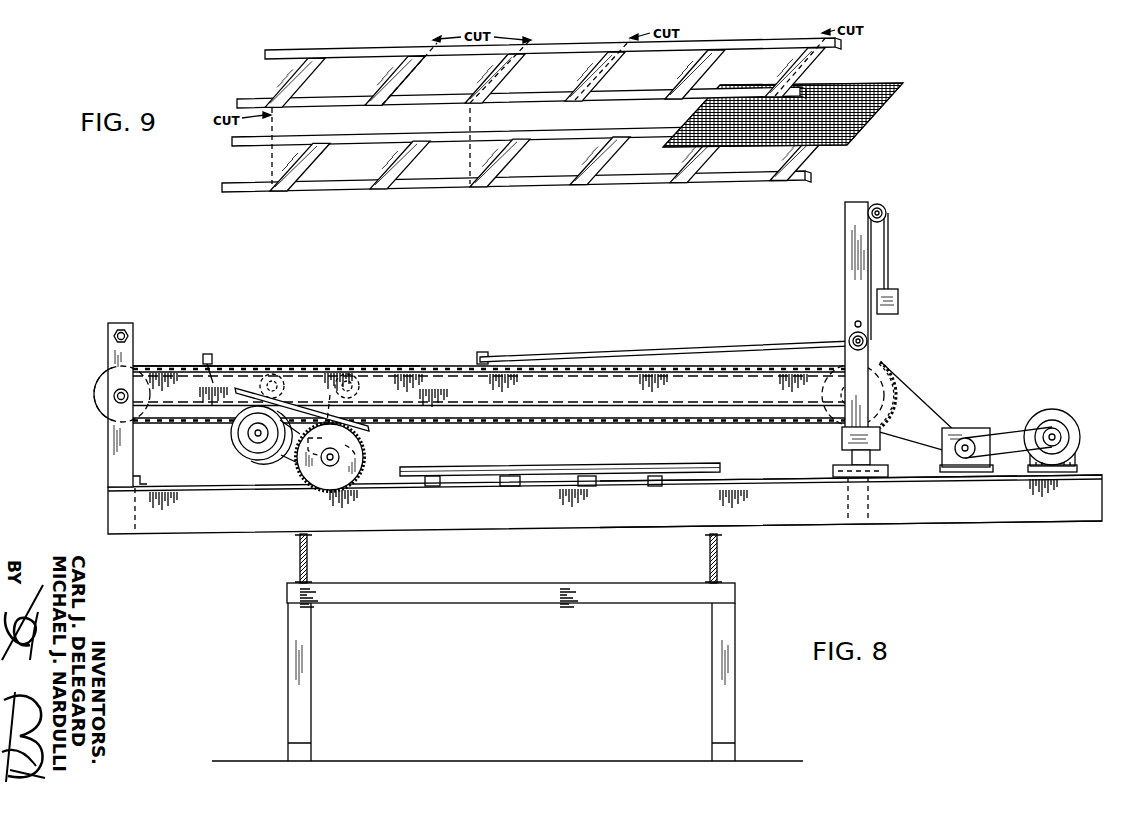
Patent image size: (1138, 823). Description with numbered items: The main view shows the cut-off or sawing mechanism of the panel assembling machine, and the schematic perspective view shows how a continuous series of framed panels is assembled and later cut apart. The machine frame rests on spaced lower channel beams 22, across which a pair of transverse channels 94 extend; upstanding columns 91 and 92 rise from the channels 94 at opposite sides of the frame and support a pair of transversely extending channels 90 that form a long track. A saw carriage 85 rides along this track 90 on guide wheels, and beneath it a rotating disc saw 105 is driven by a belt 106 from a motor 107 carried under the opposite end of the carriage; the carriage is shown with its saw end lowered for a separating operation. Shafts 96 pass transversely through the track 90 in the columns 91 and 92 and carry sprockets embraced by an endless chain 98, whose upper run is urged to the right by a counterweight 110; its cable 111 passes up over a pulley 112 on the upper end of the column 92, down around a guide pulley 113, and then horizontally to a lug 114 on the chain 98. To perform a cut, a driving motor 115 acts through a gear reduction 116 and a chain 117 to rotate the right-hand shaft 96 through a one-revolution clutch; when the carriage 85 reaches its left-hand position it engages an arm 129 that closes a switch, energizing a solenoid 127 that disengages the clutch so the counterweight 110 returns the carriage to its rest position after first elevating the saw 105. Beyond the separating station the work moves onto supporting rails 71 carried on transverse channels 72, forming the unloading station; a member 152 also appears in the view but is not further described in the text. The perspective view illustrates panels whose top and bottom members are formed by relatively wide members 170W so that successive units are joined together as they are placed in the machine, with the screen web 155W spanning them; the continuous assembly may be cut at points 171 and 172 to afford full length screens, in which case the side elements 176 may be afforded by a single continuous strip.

In FIG. 9, the relatively wide members 170W is at (510, 165).
In FIG. 9, the screen web 155W is at (872, 112).
In FIG. 9, the frame elements 176 is at (443, 135).
In FIG. 9, the cut point 171 is at (268, 155).
In FIG. 9, the cut point 172 is at (466, 164).
In FIG. 8, the transverse channels 72 is at (215, 520).
In FIG. 8, the transverse channels 94 is at (958, 512).
In FIG. 8, the lower channel beams 22 is at (299, 557).
In FIG. 8, the upstanding column 91 is at (126, 348).
In FIG. 8, the shafts 96 is at (96, 398).
In FIG. 8, the channels 90 is at (432, 380).
In FIG. 8, the endless chain 98 is at (178, 366).
In FIG. 8, the arm 129 is at (216, 378).
In FIG. 8, the saw carriage 85 is at (317, 409).
In FIG. 8, the motor 107 is at (234, 441).
In FIG. 8, the belt 106 is at (296, 460).
In FIG. 8, the rotating disc saw 105 is at (362, 448).
In FIG. 8, the table plate 152 is at (553, 468).
In FIG. 8, the supporting rails 71 is at (577, 486).
In FIG. 8, the lug 114 is at (483, 352).
In FIG. 8, the cable 111 is at (690, 356).
In FIG. 8, the column 92 is at (850, 292).
In FIG. 8, the pulley 112 is at (887, 207).
In FIG. 8, the counterweight 110 is at (900, 298).
In FIG. 8, the guide pulley 113 is at (850, 339).
In FIG. 8, the chain 117 is at (912, 389).
In FIG. 8, the solenoid 127 is at (841, 440).
In FIG. 8, the driving motor 115 is at (1058, 419).
In FIG. 8, the gear reduction 116 is at (975, 432).